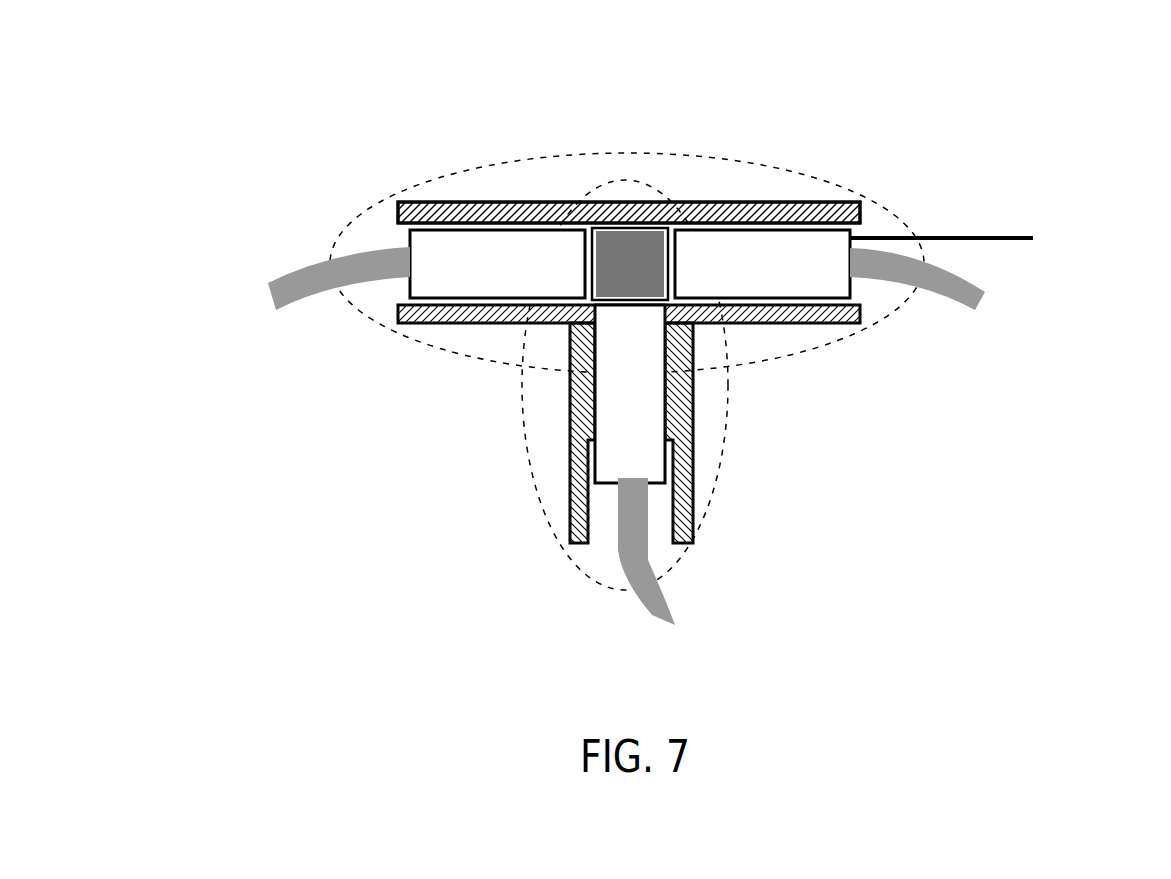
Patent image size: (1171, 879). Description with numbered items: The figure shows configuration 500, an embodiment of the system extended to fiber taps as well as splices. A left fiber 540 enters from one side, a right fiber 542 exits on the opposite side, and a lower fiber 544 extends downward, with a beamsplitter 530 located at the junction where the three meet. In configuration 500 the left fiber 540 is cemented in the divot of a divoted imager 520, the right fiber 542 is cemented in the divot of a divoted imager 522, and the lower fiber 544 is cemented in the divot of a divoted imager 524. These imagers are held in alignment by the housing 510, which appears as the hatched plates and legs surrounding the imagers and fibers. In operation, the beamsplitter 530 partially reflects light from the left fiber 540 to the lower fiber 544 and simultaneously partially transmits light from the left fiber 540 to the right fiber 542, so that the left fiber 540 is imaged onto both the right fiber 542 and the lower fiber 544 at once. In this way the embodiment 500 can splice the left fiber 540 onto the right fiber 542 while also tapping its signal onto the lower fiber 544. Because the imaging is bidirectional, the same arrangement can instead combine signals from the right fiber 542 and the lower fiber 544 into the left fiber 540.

The configuration 500 is at (215, 201).
The housing 510 is at (527, 203).
The divoted imager 520 is at (408, 236).
The divoted imager 522 is at (1033, 238).
The divoted imager 524 is at (650, 487).
The beamsplitter 530 is at (625, 235).
The left fiber 540 is at (268, 296).
The right fiber 542 is at (990, 297).
The lower fiber 544 is at (670, 609).